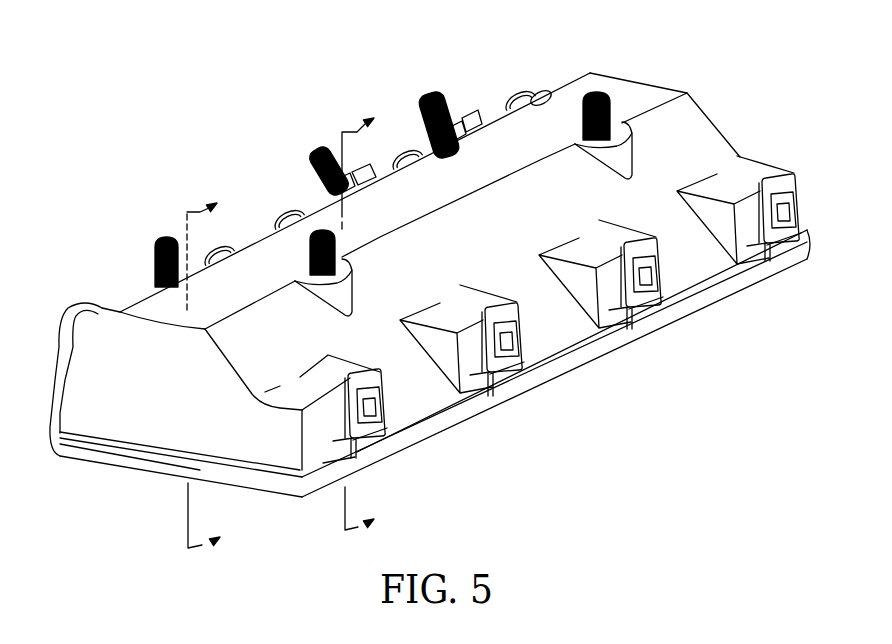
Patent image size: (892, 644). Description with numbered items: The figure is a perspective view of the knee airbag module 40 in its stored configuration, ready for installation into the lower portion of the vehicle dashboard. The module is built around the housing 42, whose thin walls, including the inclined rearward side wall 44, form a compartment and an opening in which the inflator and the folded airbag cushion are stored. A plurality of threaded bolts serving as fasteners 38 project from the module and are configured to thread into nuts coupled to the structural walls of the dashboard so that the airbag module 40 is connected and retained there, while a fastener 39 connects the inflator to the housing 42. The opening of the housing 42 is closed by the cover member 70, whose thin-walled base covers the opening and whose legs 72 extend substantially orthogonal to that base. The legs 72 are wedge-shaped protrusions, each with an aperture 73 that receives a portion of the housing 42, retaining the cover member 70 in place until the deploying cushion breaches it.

The fastener 38 is at (170, 237).
The fastener 39 is at (312, 152).
The airbag module 40 is at (176, 143).
The housing 42 is at (153, 409).
The inclined rearward side wall 44 is at (478, 223).
The cover member 70 is at (574, 380).
The legs 72 is at (793, 200).
The aperture 73 is at (799, 211).